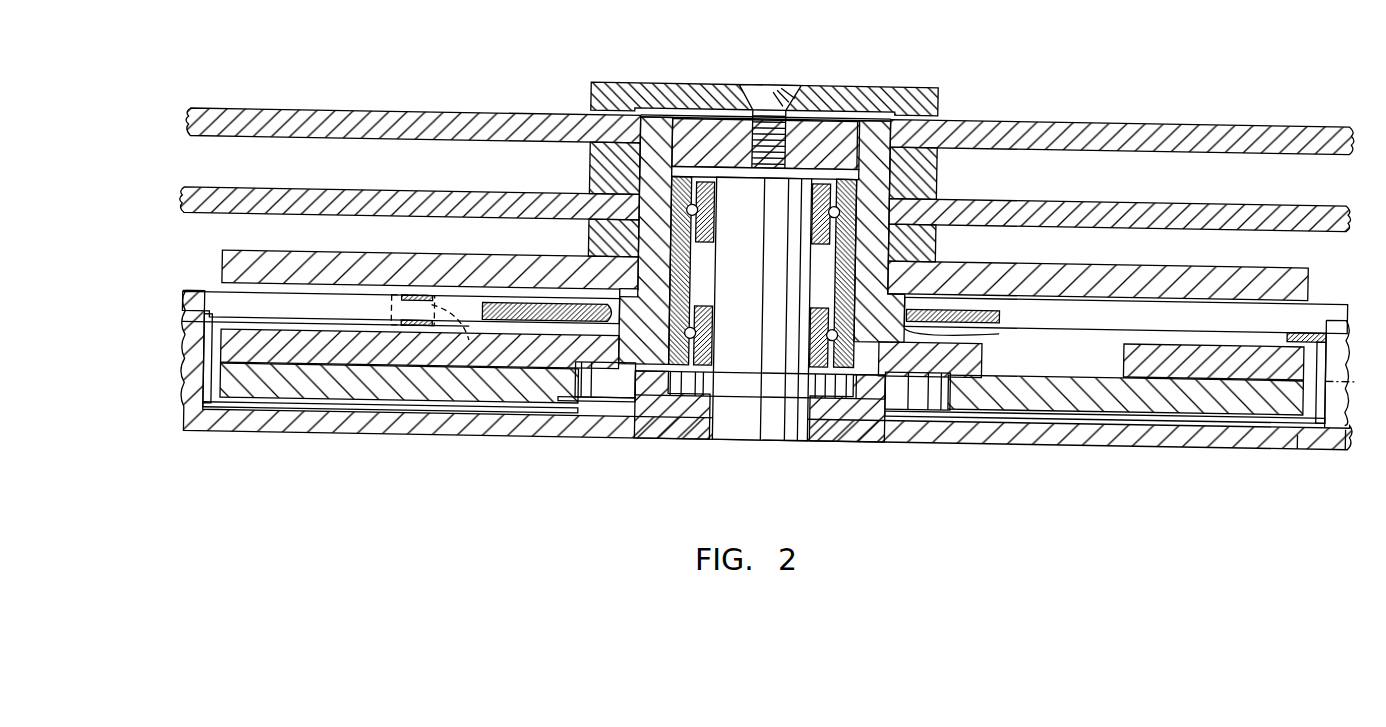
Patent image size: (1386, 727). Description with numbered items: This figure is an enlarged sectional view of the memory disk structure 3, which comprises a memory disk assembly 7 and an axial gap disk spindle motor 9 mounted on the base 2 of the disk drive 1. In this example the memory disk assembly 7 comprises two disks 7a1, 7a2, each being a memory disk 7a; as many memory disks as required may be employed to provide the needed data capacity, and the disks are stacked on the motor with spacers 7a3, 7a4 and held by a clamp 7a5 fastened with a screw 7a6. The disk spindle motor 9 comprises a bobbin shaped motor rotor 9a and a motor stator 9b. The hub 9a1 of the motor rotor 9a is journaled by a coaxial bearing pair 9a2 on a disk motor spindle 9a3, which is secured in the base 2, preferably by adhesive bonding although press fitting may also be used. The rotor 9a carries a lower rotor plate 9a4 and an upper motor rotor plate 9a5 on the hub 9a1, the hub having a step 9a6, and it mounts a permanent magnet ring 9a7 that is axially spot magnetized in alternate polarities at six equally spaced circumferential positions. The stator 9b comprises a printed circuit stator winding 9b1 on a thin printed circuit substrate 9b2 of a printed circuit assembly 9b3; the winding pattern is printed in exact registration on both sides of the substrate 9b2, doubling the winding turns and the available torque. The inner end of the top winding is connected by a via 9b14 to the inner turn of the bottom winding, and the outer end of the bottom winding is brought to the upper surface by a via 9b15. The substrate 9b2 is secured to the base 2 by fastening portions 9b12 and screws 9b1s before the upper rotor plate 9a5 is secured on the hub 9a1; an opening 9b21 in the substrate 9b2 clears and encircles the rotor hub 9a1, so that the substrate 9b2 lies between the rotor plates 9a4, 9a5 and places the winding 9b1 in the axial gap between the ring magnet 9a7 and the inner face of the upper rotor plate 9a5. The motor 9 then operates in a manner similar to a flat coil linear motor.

The disk drive housing 1 is at (768, 381).
The base 2 is at (455, 430).
The memory disk structure 3 is at (531, 90).
The memory disk assembly 7 is at (776, 152).
The memory disk 7a is at (776, 170).
The disk 7a1 is at (1320, 137).
The disk 7a2 is at (1320, 222).
The lower spacer 7a3 is at (937, 258).
The upper spacer 7a4 is at (937, 182).
The disk clamp 7a5 is at (937, 98).
The clamp screw 7a6 is at (780, 96).
The disk spindle motor 9 is at (744, 262).
The motor rotor 9a is at (715, 257).
The hub 9a1 is at (655, 130).
The coaxial bearing pair 9a2 is at (698, 212).
The disk motor spindle 9a3 is at (745, 355).
The rotor plate 9a4 is at (485, 370).
The upper motor rotor plate 9a5 is at (468, 268).
The hub step portion 9a6 is at (625, 292).
The permanent magnet ring 9a7 is at (218, 345).
The motor stator 9b is at (745, 353).
The printed circuit stator winding 9b1 is at (216, 297).
The stator fixing screw 9b1s is at (1304, 445).
The printed circuit substrate 9b2 is at (213, 300).
The printed circuit assembly 9b3 is at (178, 303).
The base plate fixing portion 9b12 is at (1348, 445).
The via 9b14 is at (513, 310).
The via 9b15 is at (396, 330).
The opening 9b21 is at (968, 334).